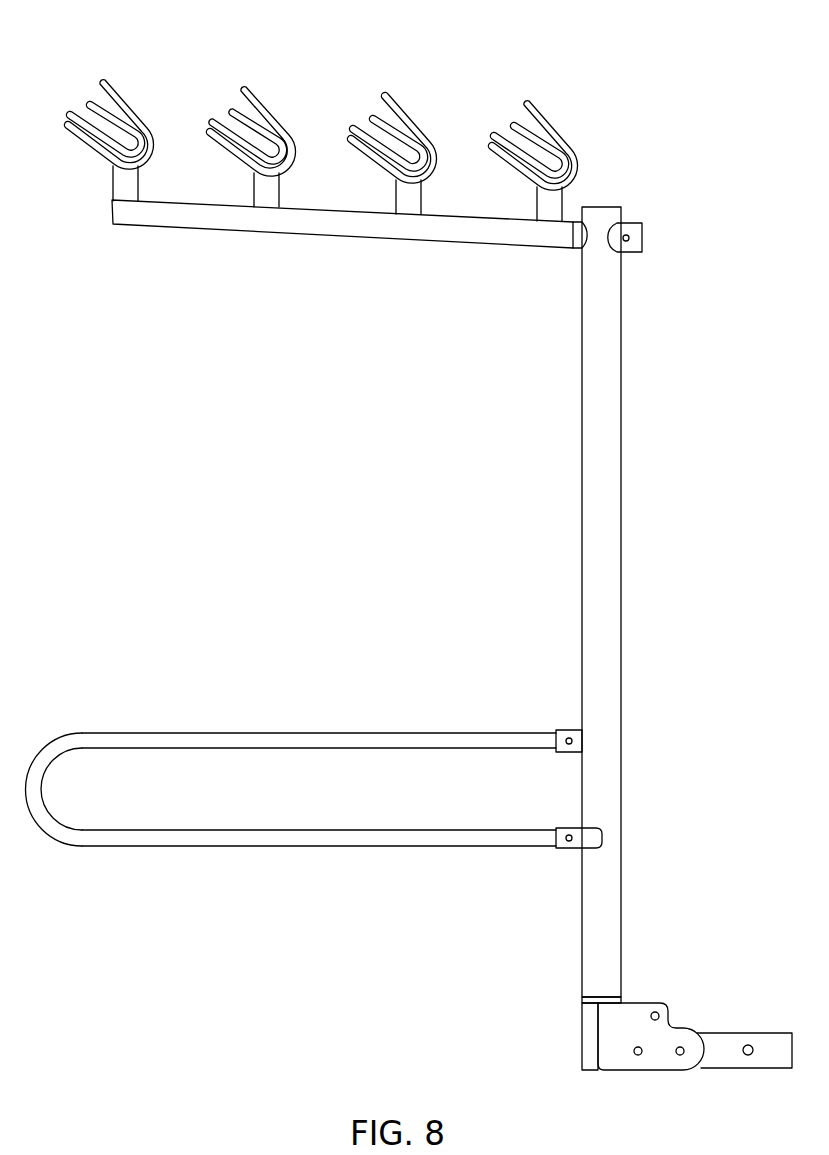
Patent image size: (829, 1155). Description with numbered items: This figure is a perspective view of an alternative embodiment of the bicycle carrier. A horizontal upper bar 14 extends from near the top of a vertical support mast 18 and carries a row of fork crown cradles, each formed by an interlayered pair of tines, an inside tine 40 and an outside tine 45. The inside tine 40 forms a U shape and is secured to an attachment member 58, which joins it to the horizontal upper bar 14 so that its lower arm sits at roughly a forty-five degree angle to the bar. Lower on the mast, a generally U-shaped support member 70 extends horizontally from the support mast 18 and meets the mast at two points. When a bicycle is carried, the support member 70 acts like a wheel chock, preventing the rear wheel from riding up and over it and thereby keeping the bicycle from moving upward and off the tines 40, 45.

The horizontal upper bar 14 is at (335, 222).
The vertical support mast 18 is at (600, 565).
The inside tine 40 is at (419, 113).
The outside tine 45 is at (610, 163).
The attachment member 58 is at (552, 205).
The support member 70 is at (270, 838).